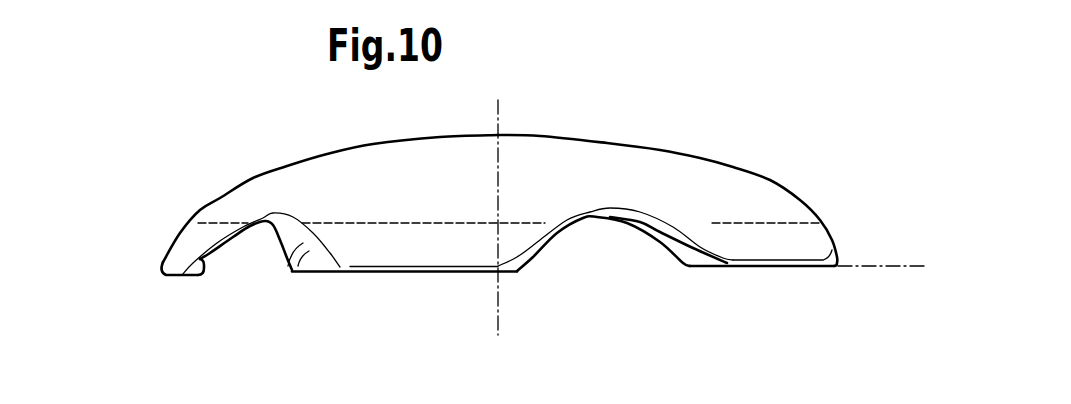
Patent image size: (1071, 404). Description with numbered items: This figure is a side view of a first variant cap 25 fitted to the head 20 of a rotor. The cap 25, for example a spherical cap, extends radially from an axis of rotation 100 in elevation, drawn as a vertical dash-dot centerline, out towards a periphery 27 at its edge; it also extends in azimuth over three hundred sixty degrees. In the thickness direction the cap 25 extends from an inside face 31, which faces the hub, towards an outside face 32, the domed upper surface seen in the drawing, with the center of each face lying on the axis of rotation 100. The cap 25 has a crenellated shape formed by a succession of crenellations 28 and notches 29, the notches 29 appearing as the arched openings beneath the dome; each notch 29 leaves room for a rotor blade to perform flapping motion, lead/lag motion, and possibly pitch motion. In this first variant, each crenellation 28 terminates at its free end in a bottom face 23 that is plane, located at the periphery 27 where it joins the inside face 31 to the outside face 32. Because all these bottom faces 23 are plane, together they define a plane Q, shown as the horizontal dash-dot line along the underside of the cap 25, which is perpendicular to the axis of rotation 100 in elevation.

The head 20 is at (707, 147).
The bottom face 23 is at (172, 283).
The cap 25 is at (772, 180).
The periphery 27 is at (147, 260).
The crenellation 28 is at (187, 240).
The notch 29 is at (245, 247).
The inside face 31 is at (310, 258).
The outside face 32 is at (287, 182).
The axis of rotation in elevation 100 is at (498, 305).
The plane Q is at (882, 267).